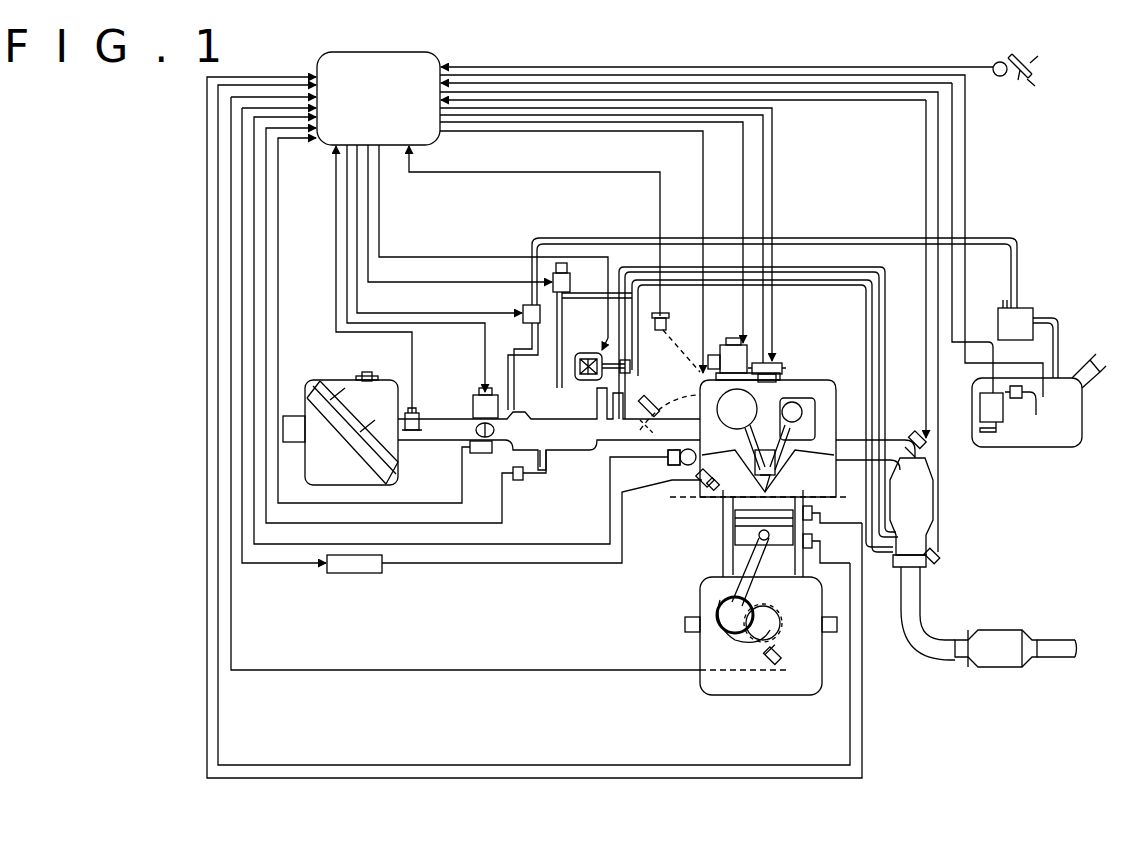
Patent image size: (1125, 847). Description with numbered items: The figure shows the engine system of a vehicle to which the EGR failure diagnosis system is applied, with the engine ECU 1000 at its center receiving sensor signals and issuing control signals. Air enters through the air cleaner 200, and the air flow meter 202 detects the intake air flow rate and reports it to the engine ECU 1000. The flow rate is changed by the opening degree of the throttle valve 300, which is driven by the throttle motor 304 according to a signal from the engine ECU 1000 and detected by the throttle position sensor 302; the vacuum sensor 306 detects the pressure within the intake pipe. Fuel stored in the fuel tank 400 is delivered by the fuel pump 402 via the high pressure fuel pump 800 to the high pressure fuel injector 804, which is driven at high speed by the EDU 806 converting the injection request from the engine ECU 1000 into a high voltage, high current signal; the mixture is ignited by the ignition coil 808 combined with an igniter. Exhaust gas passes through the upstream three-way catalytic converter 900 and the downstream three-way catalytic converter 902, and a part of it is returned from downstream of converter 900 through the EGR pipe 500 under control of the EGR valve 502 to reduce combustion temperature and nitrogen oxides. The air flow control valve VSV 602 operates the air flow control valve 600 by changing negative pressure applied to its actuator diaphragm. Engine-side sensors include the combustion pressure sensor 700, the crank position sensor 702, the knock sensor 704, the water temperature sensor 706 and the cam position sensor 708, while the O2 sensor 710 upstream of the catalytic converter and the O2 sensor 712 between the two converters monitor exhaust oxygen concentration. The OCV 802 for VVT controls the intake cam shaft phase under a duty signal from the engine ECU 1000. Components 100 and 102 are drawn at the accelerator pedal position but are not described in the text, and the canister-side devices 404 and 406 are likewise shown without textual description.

The accelerator pedal 100 is at (1020, 80).
The accelerator pedal position sensor 102 is at (993, 64).
The air cleaner 200 is at (340, 378).
The air flow meter 202 is at (420, 413).
The throttle valve 300 is at (476, 432).
The throttle position sensor 302 is at (485, 454).
The throttle motor 304 is at (476, 392).
The vacuum sensor 306 is at (522, 480).
The fuel tank 400 is at (1055, 448).
The fuel pump 402 is at (1003, 420).
The canister 404 is at (1035, 325).
The purge control valve 406 is at (521, 308).
The EGR pipe 500 is at (834, 266).
The EGR valve 502 is at (575, 357).
The air flow control valve 600 is at (655, 392).
The air flow control valve VSV 602 is at (563, 262).
The combustion pressure sensor 700 is at (685, 465).
The crank position sensor 702 is at (775, 665).
The knock sensor 704 is at (812, 541).
The water temperature sensor 706 is at (812, 513).
The cam position sensor 708 is at (666, 322).
The O2 sensor 710 is at (916, 433).
The O2 sensor 712 is at (938, 560).
The high pressure fuel pump 800 is at (732, 345).
The OCV for VVT 802 is at (668, 460).
The high pressure fuel injector 804 is at (708, 490).
The EDU 806 is at (360, 575).
The ignition coil 808 is at (770, 362).
The three-way catalytic converter 900 is at (918, 505).
The three-way catalytic converter 902 is at (1000, 667).
The engine ECU 1000 is at (400, 52).